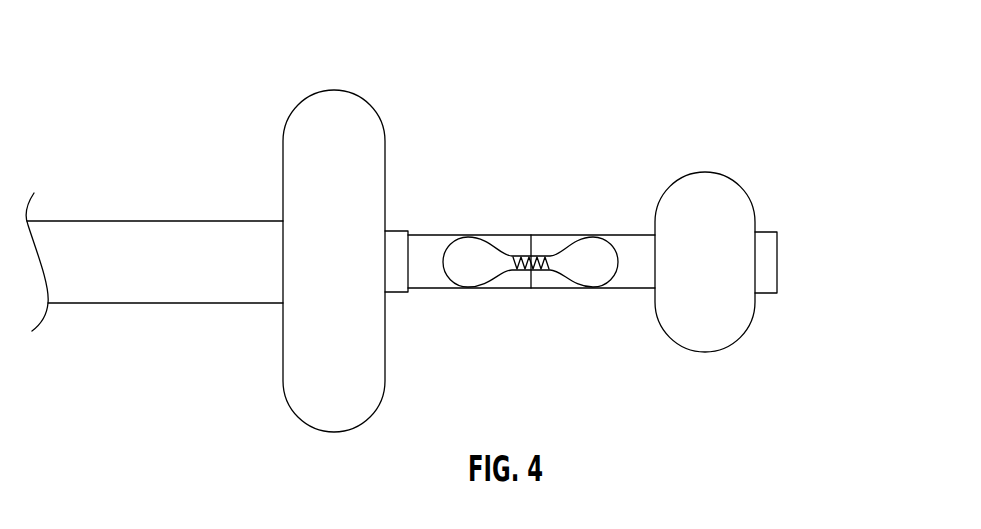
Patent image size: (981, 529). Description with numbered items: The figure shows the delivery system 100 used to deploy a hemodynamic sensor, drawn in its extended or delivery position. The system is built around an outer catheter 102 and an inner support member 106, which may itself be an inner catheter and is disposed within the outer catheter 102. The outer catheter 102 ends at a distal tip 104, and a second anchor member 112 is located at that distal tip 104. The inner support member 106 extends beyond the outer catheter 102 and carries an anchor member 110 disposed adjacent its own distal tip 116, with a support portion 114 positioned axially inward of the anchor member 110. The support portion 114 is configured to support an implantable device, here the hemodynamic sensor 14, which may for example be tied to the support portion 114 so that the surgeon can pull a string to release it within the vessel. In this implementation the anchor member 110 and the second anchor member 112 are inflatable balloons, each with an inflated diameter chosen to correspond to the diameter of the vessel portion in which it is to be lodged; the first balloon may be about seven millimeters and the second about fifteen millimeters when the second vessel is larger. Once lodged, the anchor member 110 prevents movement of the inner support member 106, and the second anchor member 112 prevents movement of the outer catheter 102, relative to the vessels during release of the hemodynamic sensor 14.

The delivery system 100 is at (536, 128).
The outer catheter 102 is at (115, 221).
The second anchor member 112 is at (313, 90).
The distal tip 104 is at (393, 293).
The inner support member 106 is at (560, 288).
The hemodynamic sensor 14 is at (567, 246).
The support portion 114 is at (505, 288).
The anchor member 110 is at (707, 172).
The distal tip 116 is at (770, 232).